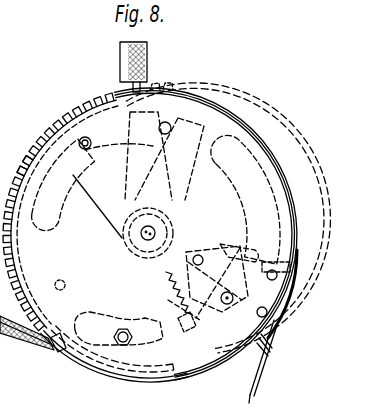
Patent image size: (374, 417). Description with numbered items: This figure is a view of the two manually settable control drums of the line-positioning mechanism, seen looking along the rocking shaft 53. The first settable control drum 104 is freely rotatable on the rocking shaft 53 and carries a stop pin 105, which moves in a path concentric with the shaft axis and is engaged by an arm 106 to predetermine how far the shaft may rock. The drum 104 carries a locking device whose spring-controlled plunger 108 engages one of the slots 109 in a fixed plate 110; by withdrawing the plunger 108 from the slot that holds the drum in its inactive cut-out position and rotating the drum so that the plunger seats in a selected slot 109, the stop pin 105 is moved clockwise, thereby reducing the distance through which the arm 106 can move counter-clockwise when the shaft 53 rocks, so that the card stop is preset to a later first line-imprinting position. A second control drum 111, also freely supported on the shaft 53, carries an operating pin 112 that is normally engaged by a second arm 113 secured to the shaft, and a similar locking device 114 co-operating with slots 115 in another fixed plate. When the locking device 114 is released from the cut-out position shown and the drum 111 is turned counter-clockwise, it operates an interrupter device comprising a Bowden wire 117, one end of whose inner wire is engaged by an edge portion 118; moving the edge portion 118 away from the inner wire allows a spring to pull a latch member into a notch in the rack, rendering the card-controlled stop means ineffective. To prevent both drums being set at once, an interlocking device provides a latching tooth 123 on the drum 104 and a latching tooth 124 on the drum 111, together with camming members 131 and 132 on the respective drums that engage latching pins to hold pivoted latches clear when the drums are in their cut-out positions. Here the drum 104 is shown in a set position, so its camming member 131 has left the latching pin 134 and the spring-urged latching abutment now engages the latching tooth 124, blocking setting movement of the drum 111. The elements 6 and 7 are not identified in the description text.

The cable sheath 6 is at (22, 165).
The cable 7 is at (15, 343).
The rocking shaft 53 is at (148, 241).
The first settable control drum 104 is at (80, 368).
The stop pin 105 is at (53, 273).
The arm 106 is at (202, 100).
The spring-controlled plunger 108 is at (20, 340).
The slots 109 is at (70, 102).
The fixed plate 110 is at (47, 120).
The second control drum 111 is at (232, 107).
The operating pin 112 is at (200, 122).
The second arm 113 is at (150, 110).
The locking device 114 is at (120, 60).
The slots 115 is at (25, 140).
The Bowden wire 117 is at (262, 357).
The edge portion 118 is at (291, 265).
The latching tooth 123 is at (119, 328).
The latching tooth 124 is at (229, 250).
The camming member 131 is at (182, 326).
The camming member 132 is at (168, 278).
The latching pin 134 is at (175, 296).